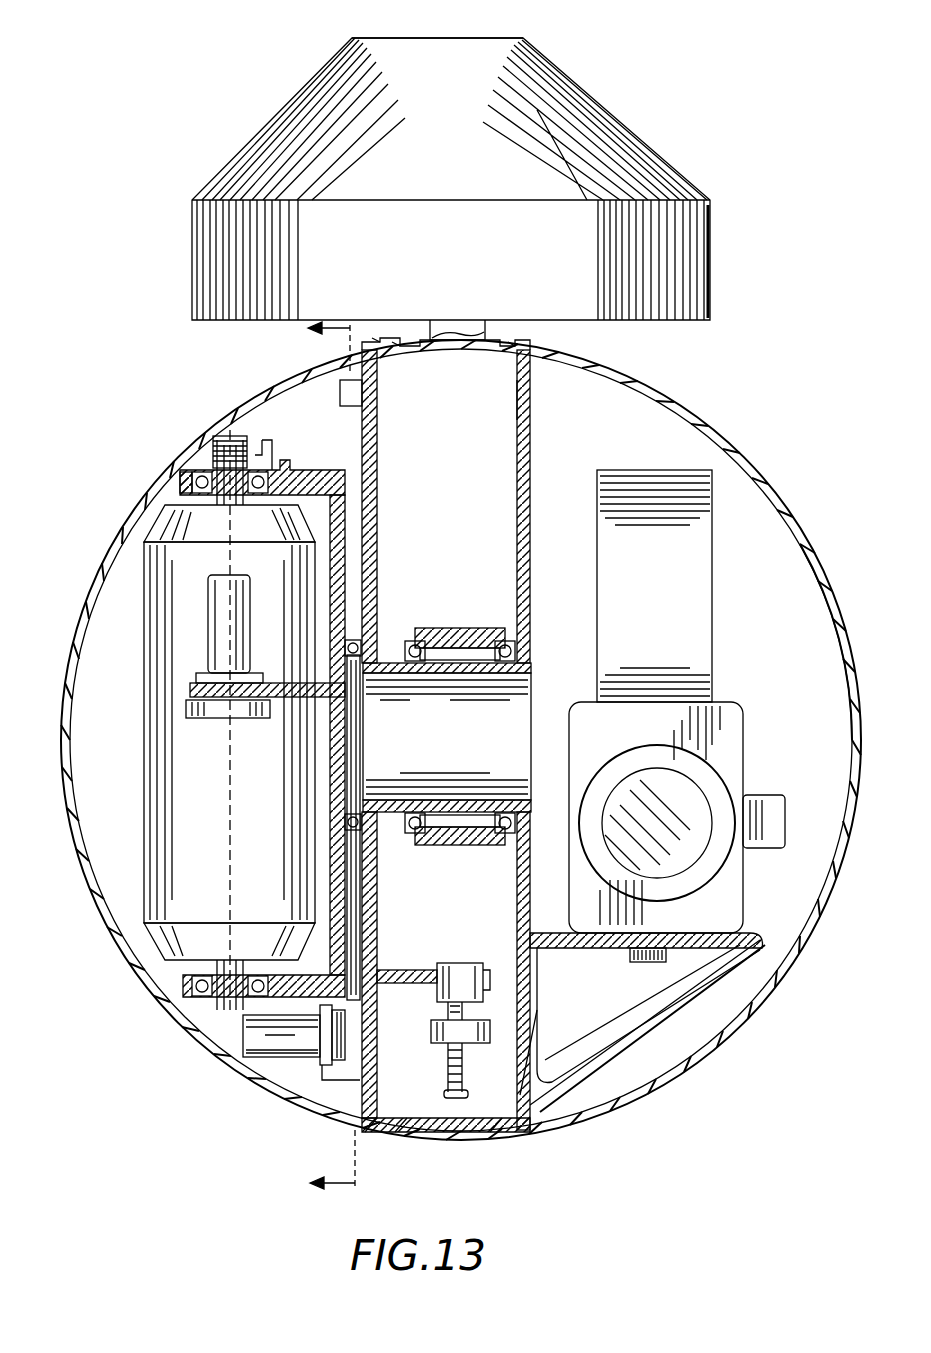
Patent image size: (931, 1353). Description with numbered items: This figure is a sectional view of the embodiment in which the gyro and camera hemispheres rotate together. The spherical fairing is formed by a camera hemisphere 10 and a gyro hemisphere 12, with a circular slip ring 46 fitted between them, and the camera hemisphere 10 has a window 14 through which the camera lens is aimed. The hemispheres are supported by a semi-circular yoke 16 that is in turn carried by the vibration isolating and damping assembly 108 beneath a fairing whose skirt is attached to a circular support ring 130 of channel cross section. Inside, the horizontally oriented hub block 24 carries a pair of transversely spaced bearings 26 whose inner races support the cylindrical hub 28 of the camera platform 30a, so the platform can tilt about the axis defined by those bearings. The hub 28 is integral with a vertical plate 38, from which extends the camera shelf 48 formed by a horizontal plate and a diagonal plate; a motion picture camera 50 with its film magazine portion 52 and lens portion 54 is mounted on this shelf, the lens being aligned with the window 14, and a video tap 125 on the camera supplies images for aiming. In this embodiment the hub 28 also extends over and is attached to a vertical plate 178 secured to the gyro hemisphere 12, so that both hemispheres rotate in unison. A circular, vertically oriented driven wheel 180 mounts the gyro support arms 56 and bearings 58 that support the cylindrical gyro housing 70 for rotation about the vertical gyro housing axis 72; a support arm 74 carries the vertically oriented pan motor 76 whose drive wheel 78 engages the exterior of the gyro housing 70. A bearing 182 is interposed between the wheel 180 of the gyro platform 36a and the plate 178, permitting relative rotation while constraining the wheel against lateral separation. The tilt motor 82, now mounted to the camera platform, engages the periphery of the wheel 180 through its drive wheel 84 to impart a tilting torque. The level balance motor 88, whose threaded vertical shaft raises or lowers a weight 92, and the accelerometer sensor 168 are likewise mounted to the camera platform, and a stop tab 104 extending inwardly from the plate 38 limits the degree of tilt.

The camera hemisphere 10 is at (768, 470).
The gyro hemisphere 12 is at (62, 758).
The window 14 is at (306, 764).
The yoke 16 is at (486, 326).
The hub block 24 is at (475, 628).
The bearings 26 is at (412, 641).
The hub 28 is at (482, 673).
The camera platform 30a is at (540, 413).
The gyro platform 36a is at (170, 484).
The vertical plate 38 is at (530, 473).
The slip ring 46 is at (466, 350).
The camera shelf 48 is at (588, 948).
The motion picture camera 50 is at (738, 752).
The film magazine portion 52 is at (712, 594).
The lens portion 54 is at (690, 875).
The gyro support arms 56 is at (292, 482).
The bearings 58 is at (195, 475).
The gyro housing 70 is at (215, 829).
The gyro housing axis 72 is at (222, 440).
The support arm 74 is at (278, 683).
The pan motor 76 is at (208, 598).
The drive wheel 78 is at (207, 706).
The tilt motor 82 is at (243, 1050).
The drive wheel 84 is at (322, 1066).
The level balance motor 88 is at (462, 963).
The weight 92 is at (490, 1030).
The tab 104 is at (500, 1065).
The vibration isolating and damping assembly 108 is at (525, 38).
The video tap 125 is at (785, 805).
The support ring 130 is at (712, 250).
The accelerometer sensor 168 is at (340, 394).
The vertical plate 178 is at (377, 410).
The driven wheel 180 is at (360, 905).
The bearing 182 is at (378, 640).